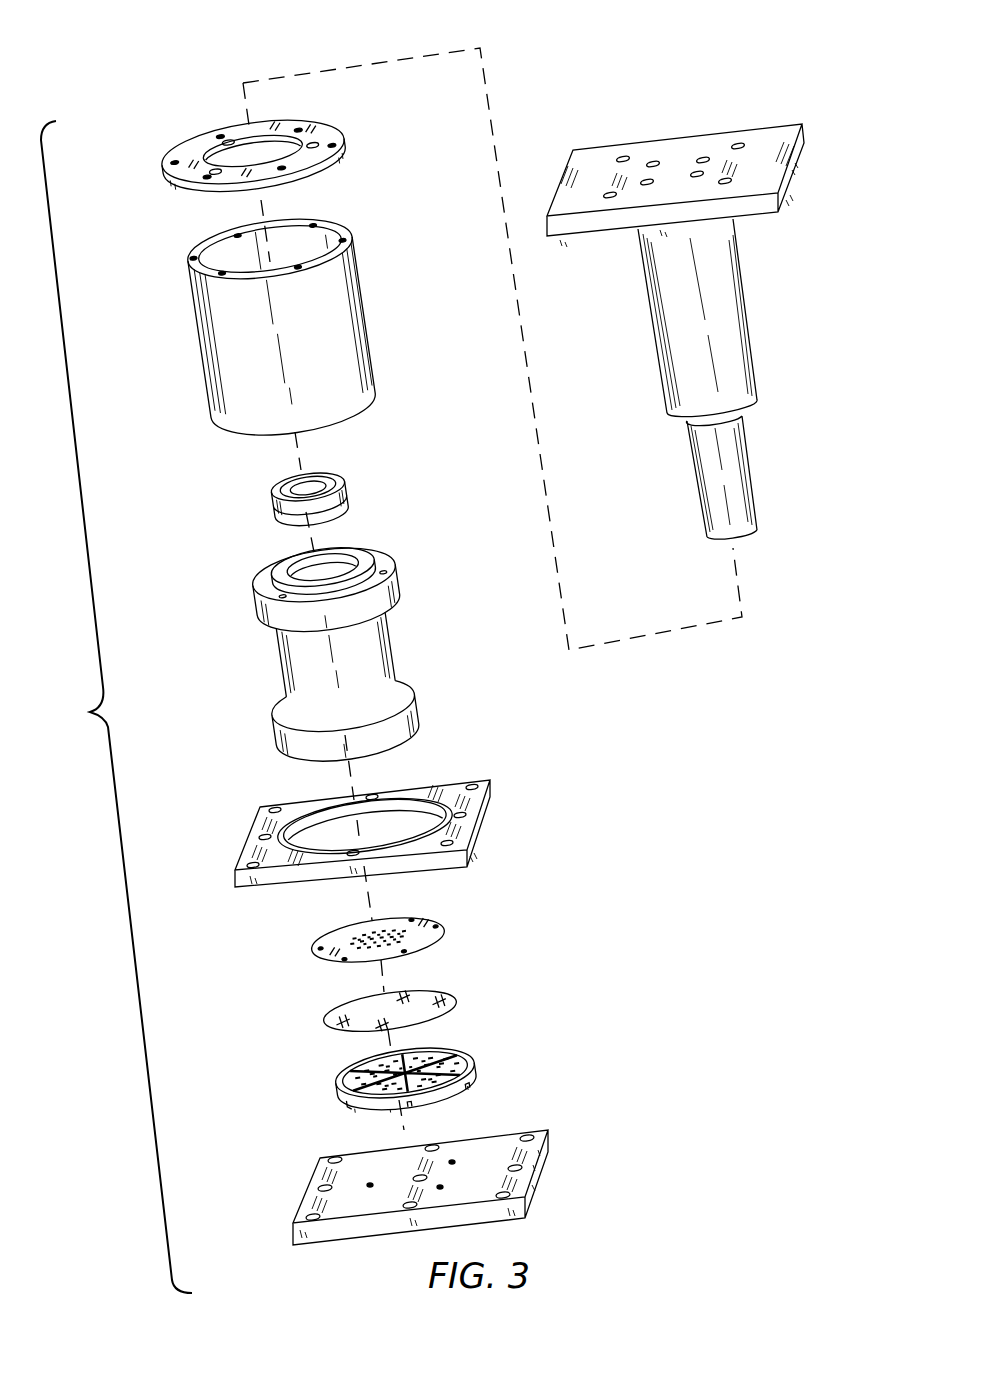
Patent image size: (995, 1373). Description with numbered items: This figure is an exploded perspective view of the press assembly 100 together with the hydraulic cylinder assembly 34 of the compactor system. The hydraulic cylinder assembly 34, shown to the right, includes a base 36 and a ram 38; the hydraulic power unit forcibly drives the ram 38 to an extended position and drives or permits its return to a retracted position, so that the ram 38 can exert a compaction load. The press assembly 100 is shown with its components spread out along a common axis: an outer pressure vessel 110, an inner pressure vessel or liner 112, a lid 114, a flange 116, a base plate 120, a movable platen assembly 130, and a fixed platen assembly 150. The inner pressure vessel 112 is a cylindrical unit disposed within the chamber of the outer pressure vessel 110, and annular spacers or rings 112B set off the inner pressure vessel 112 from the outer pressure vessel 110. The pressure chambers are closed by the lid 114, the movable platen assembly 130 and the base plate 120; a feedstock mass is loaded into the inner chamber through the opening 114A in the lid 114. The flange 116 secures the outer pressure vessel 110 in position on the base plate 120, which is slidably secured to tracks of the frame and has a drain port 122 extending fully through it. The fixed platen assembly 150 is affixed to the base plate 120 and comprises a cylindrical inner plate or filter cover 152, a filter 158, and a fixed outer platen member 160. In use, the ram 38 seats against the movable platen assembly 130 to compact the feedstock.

The press assembly 100 is at (167, 22).
The hydraulic cylinder assembly 34 is at (771, 278).
The base 36 is at (745, 137).
The ram 38 is at (752, 518).
The outer pressure vessel 110 is at (337, 268).
The inner pressure vessel 112 is at (377, 628).
The annular spacers 112B is at (390, 580).
The lid 114 is at (330, 137).
The opening 114A is at (247, 160).
The flange 116 is at (453, 785).
The base plate 120 is at (507, 1142).
The drain port 122 is at (418, 1178).
The movable platen assembly 130 is at (330, 490).
The fixed platen assembly 150 is at (298, 1028).
The filter cover 152 is at (440, 918).
The filter 158 is at (443, 997).
The fixed outer platen member 160 is at (460, 1056).